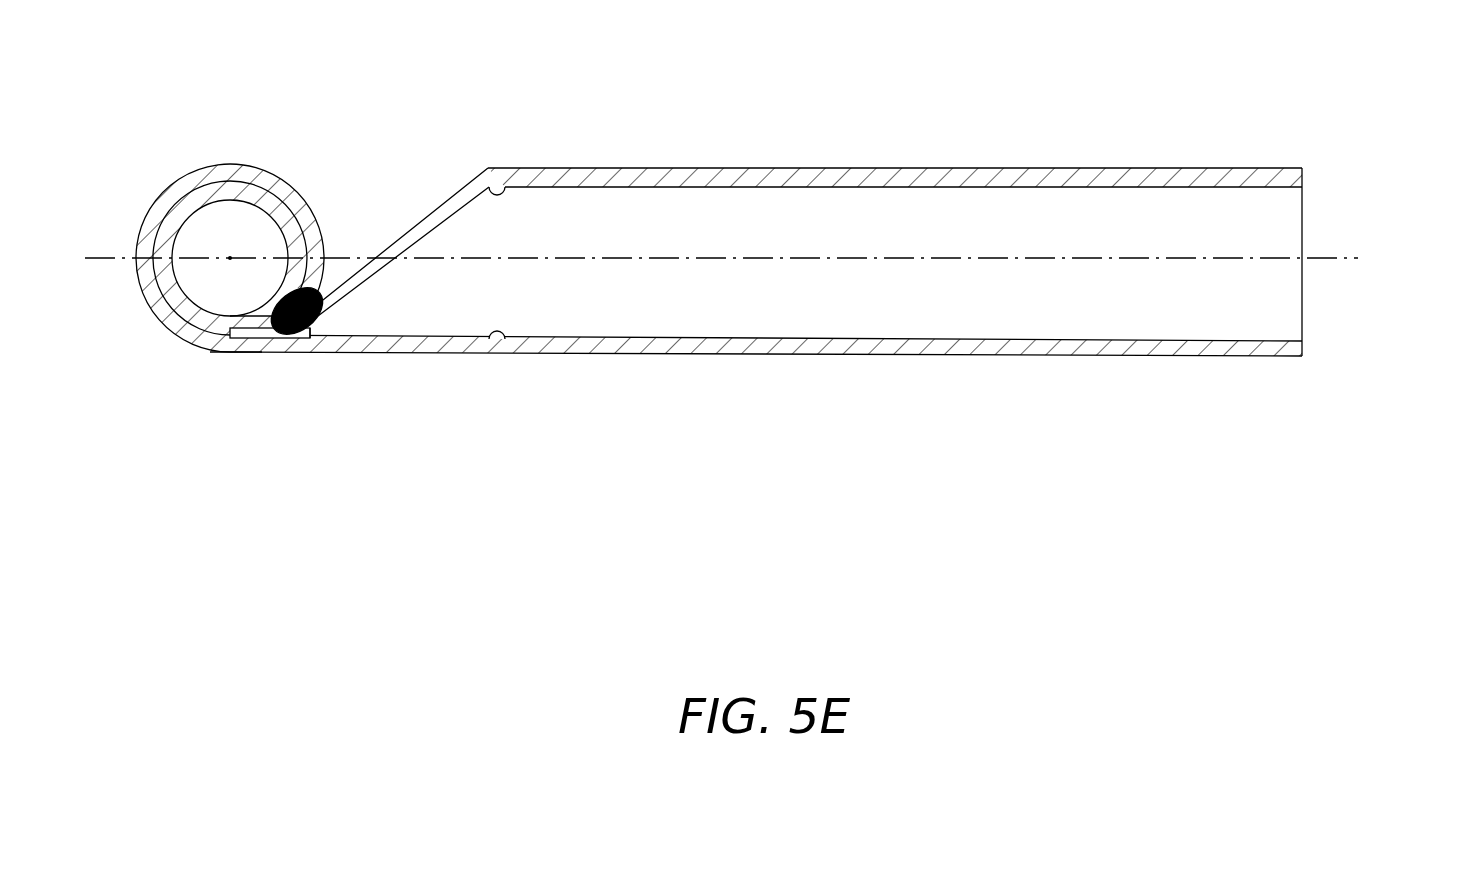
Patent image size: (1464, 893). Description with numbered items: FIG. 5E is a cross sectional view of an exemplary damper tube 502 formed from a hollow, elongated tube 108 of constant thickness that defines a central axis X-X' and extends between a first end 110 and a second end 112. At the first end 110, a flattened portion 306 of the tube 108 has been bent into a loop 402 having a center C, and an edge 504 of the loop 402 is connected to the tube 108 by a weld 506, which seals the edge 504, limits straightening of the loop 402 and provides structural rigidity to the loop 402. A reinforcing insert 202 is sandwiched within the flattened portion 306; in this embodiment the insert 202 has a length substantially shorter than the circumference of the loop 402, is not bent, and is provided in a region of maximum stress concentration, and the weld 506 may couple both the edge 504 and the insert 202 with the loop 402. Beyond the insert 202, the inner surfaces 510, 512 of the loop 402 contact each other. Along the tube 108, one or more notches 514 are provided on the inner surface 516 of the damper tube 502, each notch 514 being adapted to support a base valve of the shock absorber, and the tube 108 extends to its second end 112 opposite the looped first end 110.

The tube 108 is at (916, 124).
The first end 110 is at (334, 230).
The second end 112 is at (1302, 159).
The reinforcing insert 202 is at (320, 330).
The flattened portion 306 is at (230, 363).
The loop 402 is at (262, 165).
The damper tube 502 is at (1282, 94).
The edge 504 is at (283, 331).
The weld 506 is at (305, 290).
The inner surface 510 is at (173, 204).
The inner surface 512 is at (236, 180).
The notch 514 is at (500, 200).
The inner surface 516 is at (820, 190).